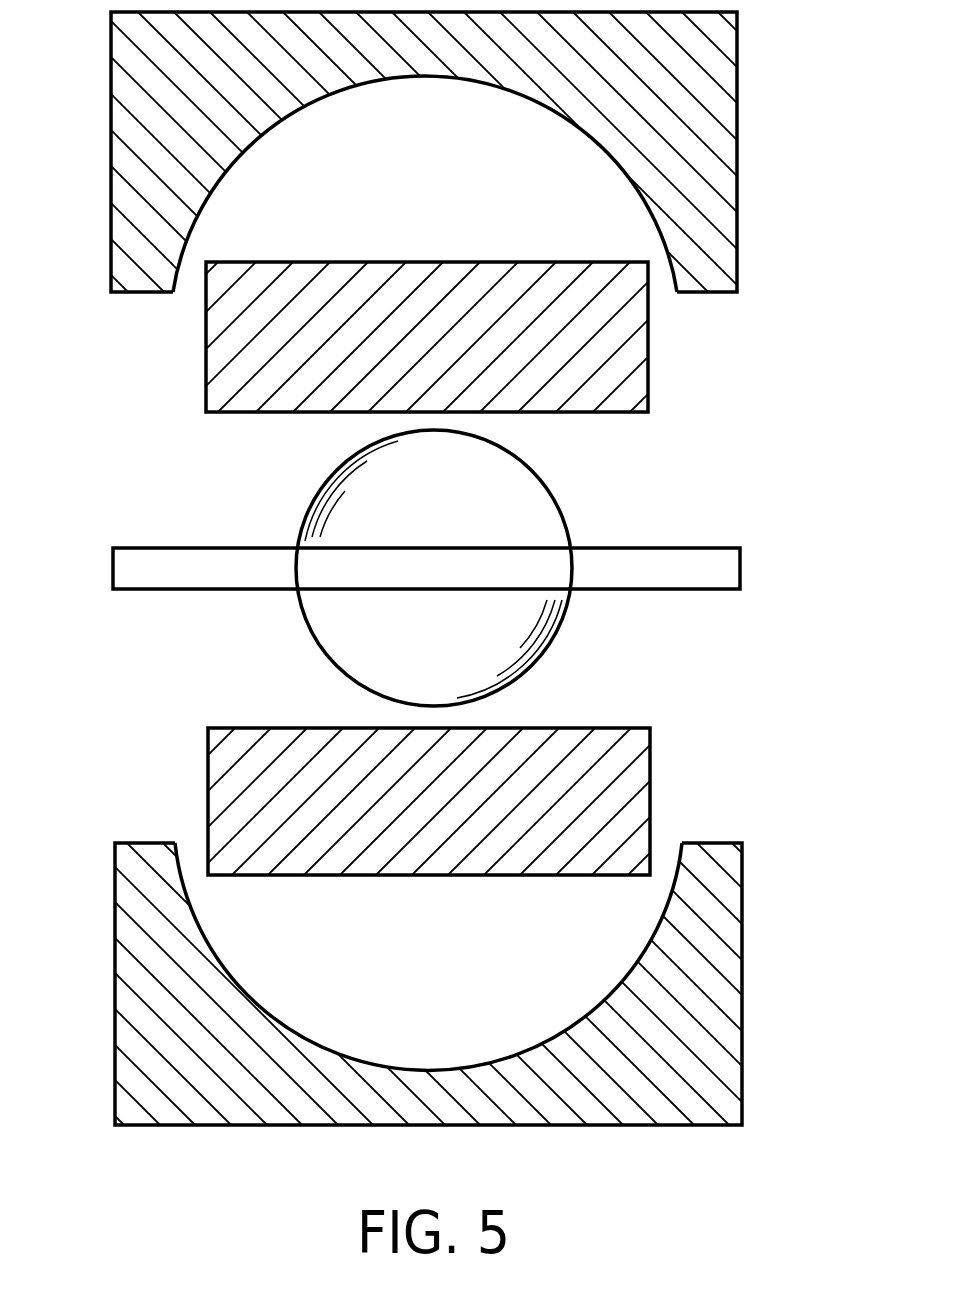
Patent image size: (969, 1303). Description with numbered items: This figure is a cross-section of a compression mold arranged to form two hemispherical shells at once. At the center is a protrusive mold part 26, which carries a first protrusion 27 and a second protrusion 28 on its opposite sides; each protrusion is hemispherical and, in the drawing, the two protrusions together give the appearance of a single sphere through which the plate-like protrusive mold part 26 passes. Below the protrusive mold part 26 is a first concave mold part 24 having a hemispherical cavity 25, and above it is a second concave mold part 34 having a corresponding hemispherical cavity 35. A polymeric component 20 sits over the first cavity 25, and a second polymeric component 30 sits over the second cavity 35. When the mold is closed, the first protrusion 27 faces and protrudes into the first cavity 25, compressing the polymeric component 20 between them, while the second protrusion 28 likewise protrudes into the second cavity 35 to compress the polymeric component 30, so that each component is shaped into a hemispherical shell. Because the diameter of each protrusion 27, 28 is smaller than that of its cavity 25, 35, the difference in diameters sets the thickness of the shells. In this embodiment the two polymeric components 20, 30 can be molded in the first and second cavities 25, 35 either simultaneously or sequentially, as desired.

The second concave mold part 34 is at (140, 172).
The hemispherical cavity 35 is at (580, 190).
The polymeric component 30 is at (250, 413).
The second protrusion 28 is at (522, 497).
The protrusive mold part 26 is at (713, 567).
The first protrusion 27 is at (345, 635).
The polymeric component 20 is at (605, 727).
The hemispherical cavity 25 is at (590, 925).
The first concave mold part 24 is at (705, 973).